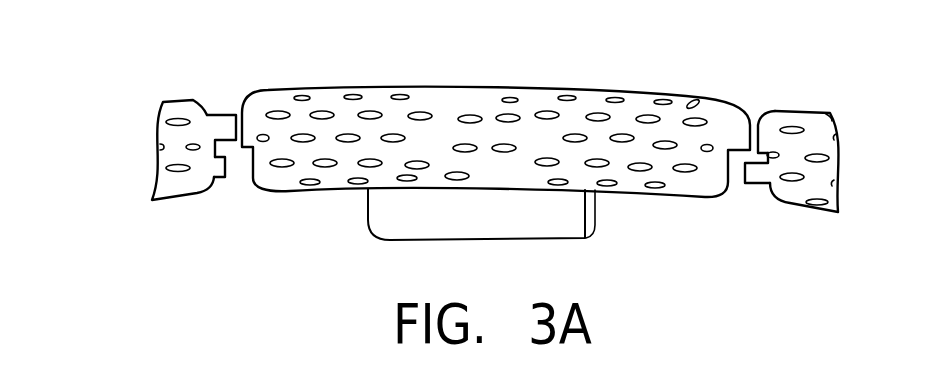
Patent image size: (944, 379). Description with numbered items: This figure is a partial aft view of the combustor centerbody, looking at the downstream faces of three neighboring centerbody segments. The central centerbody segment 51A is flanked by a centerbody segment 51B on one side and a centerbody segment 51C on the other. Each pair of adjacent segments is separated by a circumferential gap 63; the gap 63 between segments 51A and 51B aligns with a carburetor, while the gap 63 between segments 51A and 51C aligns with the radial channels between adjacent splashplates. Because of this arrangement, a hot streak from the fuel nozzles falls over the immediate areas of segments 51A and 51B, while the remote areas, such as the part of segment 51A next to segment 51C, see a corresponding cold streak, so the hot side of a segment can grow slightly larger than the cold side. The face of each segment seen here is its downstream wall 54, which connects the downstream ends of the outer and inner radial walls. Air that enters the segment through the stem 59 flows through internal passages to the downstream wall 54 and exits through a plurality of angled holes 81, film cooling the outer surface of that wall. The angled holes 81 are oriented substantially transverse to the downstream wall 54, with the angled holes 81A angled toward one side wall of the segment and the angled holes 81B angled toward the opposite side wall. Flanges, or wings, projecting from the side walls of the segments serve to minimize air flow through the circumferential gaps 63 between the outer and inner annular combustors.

The centerbody segment 51A is at (496, 116).
The centerbody segment 51B is at (787, 198).
The centerbody segment 51C is at (178, 106).
The downstream wall 54 is at (440, 118).
The stem 59 is at (568, 227).
The circumferential gap 63 is at (241, 95).
The angled holes 81 is at (358, 186).
The angled holes 81A is at (353, 97).
The angled holes 81B is at (594, 115).